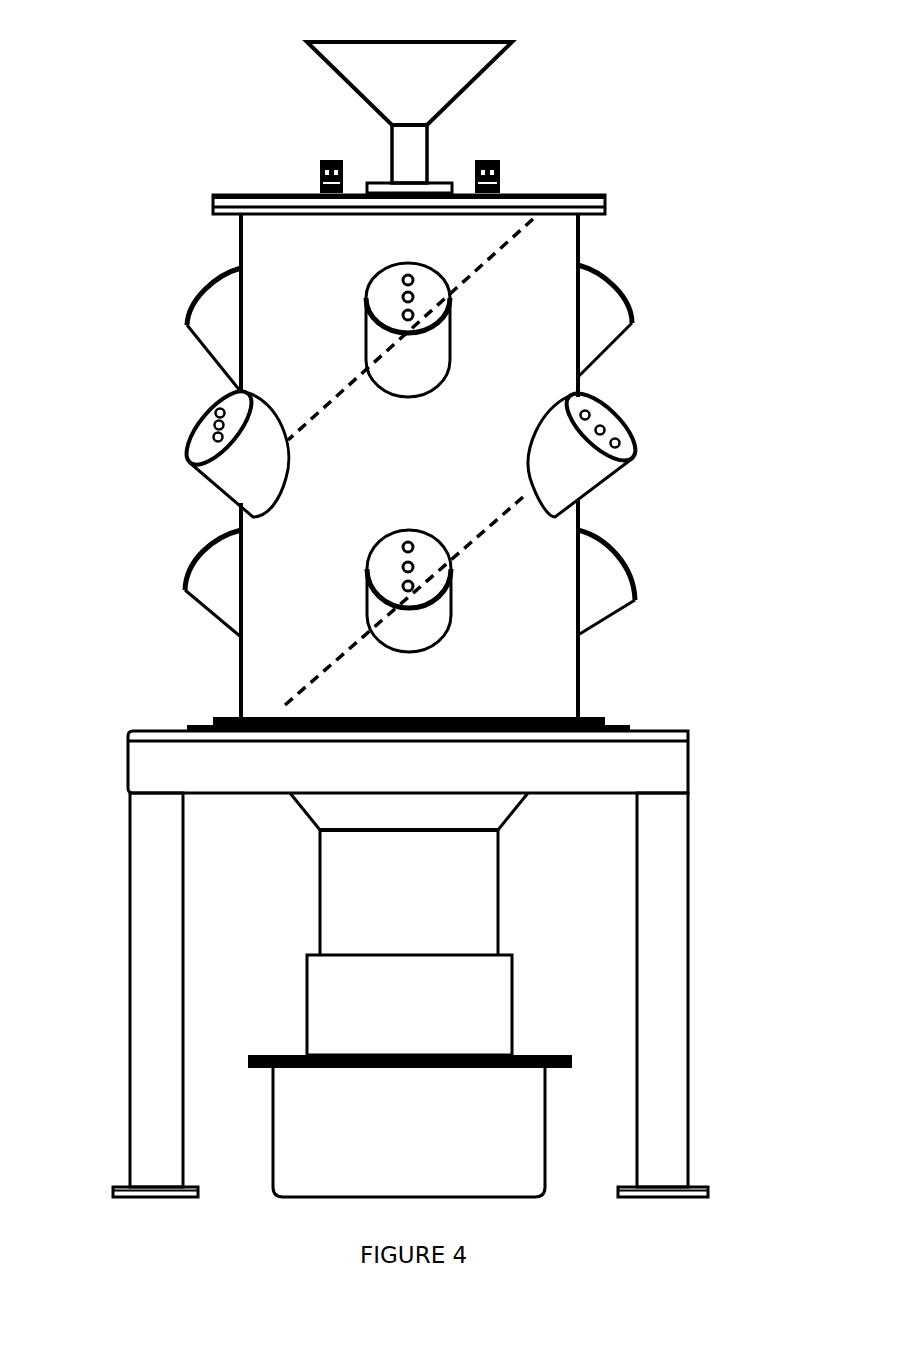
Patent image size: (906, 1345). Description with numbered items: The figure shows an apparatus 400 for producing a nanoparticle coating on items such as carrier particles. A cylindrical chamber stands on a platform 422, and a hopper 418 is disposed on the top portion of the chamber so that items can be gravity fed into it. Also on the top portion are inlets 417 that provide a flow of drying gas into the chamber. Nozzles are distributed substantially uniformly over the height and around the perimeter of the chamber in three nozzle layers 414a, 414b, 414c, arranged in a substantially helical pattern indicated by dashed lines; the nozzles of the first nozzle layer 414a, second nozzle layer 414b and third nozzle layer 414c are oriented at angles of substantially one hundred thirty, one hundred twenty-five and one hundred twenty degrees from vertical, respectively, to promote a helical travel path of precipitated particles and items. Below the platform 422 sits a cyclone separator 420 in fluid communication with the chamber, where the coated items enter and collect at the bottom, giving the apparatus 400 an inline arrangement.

The apparatus 400 is at (630, 135).
The first nozzle layer 414a is at (189, 313).
The second nozzle layer 414b is at (189, 462).
The third nozzle layer 414c is at (185, 590).
The inlets 417 is at (317, 166).
The hopper 418 is at (494, 58).
The cyclone separator 420 is at (424, 1141).
The platform 422 is at (424, 785).